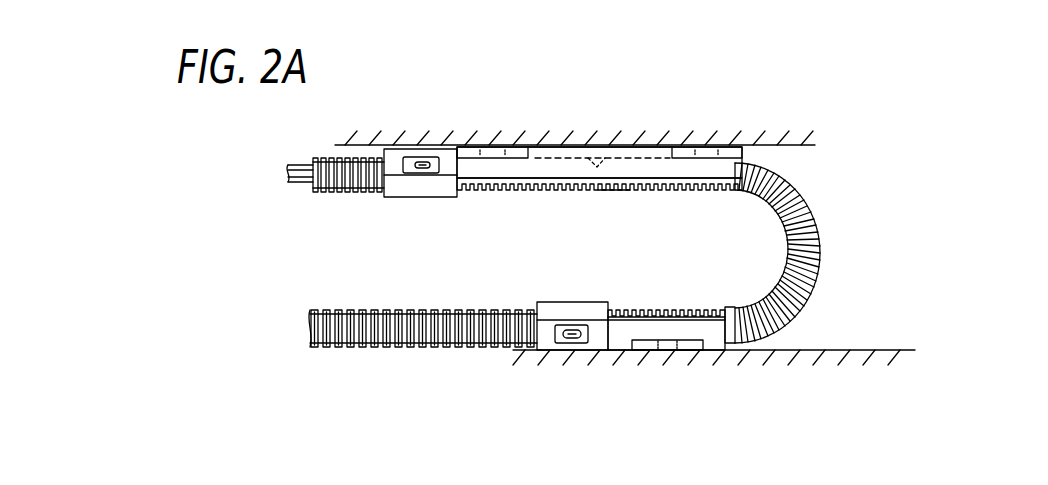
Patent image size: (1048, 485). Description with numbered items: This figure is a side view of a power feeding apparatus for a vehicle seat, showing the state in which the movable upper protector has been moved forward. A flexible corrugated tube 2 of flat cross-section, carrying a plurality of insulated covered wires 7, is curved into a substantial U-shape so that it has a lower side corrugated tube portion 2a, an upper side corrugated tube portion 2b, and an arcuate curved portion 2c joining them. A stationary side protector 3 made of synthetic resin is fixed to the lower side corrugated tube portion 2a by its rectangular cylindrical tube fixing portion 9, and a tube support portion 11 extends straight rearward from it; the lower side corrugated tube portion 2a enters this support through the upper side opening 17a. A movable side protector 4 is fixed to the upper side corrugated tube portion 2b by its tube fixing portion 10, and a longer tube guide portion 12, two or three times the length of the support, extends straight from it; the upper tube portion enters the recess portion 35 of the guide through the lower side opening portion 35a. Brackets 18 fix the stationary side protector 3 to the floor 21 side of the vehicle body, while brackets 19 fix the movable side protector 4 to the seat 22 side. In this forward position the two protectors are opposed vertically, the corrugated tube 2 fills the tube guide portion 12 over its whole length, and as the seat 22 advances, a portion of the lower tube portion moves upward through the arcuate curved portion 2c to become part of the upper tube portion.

The corrugated tube 2 is at (678, 253).
The lower side corrugated tube portion 2a is at (668, 310).
The upper side corrugated tube portion 2b is at (668, 191).
The arcuate curved portion 2c is at (820, 240).
The stationary side protector 3 is at (666, 382).
The movable side protector 4 is at (627, 140).
The insulated covered wires 7 is at (303, 184).
The tube fixing portion 9 is at (572, 302).
The tube fixing portion 10 is at (421, 199).
The tube support portion 11 is at (687, 350).
The tube guide portion 12 is at (578, 140).
The upper side opening 17a is at (697, 304).
The bracket 18 is at (643, 350).
The bracket 19 is at (512, 146).
The floor 21 is at (873, 350).
The seat 22 is at (803, 146).
The recess portion 35 is at (602, 143).
The lower side opening portion 35a is at (614, 191).